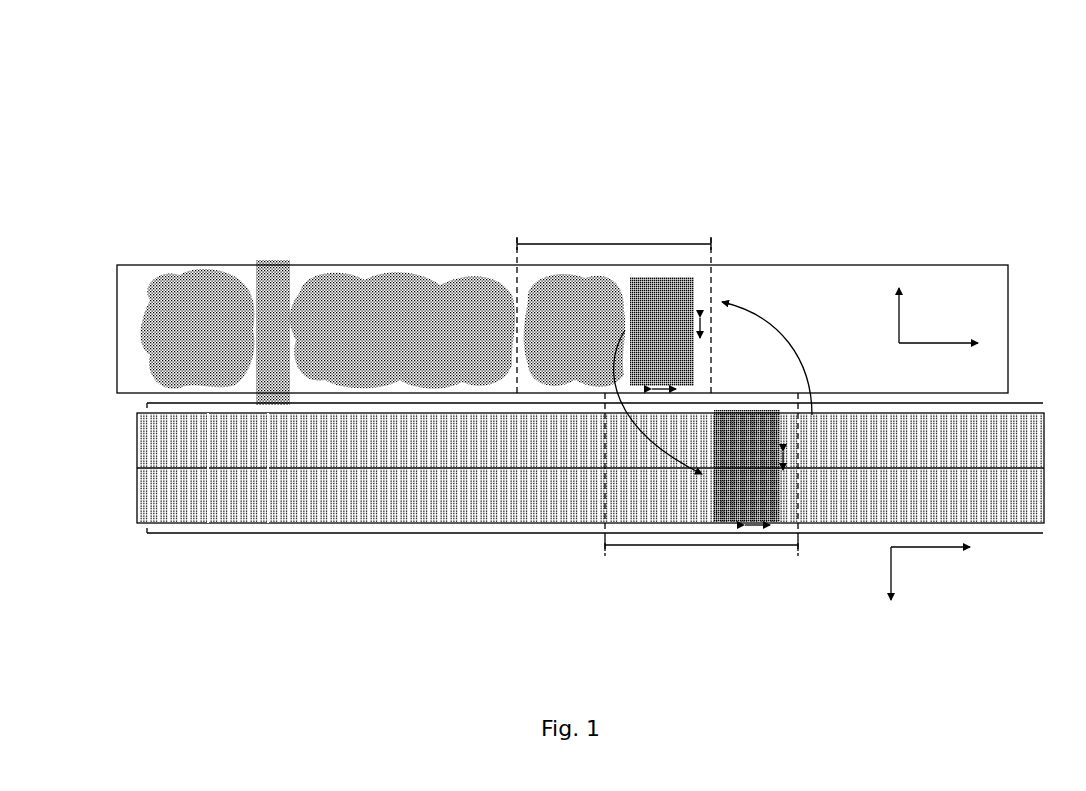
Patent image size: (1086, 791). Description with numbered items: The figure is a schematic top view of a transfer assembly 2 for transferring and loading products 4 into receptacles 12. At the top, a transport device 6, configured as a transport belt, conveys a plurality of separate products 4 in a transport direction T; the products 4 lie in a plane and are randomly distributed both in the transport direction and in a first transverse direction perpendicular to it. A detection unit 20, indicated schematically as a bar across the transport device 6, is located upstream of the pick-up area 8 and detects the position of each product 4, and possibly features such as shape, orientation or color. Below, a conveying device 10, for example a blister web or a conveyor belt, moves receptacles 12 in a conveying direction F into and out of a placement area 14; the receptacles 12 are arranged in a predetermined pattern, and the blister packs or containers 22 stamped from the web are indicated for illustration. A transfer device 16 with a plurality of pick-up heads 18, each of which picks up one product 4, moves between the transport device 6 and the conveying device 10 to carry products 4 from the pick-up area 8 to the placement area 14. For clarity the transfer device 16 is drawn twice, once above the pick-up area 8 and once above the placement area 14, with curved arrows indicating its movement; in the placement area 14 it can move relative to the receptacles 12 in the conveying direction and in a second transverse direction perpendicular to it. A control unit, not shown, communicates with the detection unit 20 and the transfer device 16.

The transfer assembly 2 is at (1030, 122).
The products 4 is at (362, 280).
The transport device 6 is at (818, 280).
The pick-up area 8 is at (614, 299).
The conveying device 10 is at (165, 527).
The receptacles 12 is at (420, 453).
The placement area 14 is at (701, 492).
The transfer device 16 is at (685, 280).
The pick-up heads 18 is at (650, 278).
The detection unit 20 is at (268, 262).
The blister packs 22 is at (271, 443).